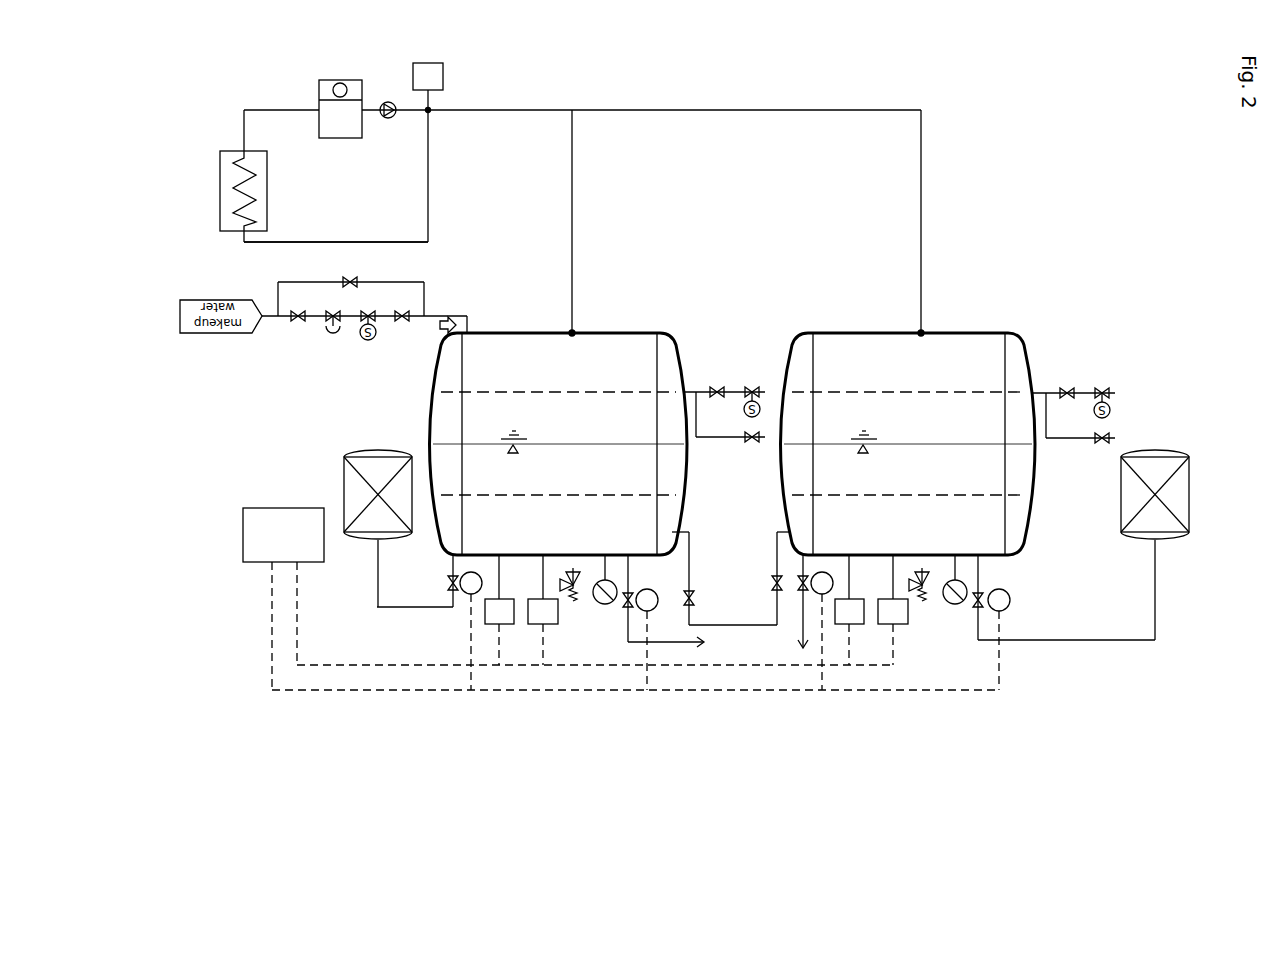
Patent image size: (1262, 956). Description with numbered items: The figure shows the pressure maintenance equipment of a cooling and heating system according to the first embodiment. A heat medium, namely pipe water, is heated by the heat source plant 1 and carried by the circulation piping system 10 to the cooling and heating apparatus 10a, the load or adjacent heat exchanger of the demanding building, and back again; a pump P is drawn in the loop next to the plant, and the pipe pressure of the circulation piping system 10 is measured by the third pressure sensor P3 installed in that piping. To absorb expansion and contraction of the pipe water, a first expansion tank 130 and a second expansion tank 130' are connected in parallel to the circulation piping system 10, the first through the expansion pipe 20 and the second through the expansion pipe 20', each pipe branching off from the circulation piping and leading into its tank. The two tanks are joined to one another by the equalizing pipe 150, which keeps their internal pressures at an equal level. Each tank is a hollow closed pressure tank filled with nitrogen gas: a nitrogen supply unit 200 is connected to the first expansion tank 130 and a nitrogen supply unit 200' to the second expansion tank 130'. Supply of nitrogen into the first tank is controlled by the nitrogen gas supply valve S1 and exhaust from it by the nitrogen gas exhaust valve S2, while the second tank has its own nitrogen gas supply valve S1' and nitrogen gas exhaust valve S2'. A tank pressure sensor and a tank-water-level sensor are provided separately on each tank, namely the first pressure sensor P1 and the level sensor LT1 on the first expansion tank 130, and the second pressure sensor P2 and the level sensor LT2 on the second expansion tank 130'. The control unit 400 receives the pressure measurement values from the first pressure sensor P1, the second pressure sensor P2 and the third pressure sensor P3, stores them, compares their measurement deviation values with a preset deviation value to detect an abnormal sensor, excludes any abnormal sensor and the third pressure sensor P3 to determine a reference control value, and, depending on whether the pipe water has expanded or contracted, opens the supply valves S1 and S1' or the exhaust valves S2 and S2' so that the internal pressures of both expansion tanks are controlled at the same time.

The heat source plant 1 is at (319, 90).
The circulation pump P is at (388, 102).
The third pressure sensor P3 is at (428, 86).
The circulation piping system 10 is at (402, 243).
The cooling and heating apparatus 10a is at (228, 233).
The expansion pipe 20 is at (541, 223).
The expansion pipe 20' is at (838, 223).
The first expansion tank 130 is at (536, 452).
The second expansion tank 130' is at (877, 444).
The equalizing pipe 150 is at (740, 625).
The nitrogen supply unit 200 is at (361, 506).
The nitrogen supply unit 200' is at (1155, 545).
The control unit 400 is at (287, 508).
The nitrogen gas supply valve S1 is at (663, 622).
The nitrogen gas exhaust valve S2 is at (429, 622).
The nitrogen gas supply valve S1' is at (815, 622).
The nitrogen gas exhaust valve S2' is at (1064, 622).
The tank-water-level sensor LT1 is at (499, 610).
The tank-water-level sensor LT2 is at (849, 610).
The first pressure sensor P1 is at (543, 610).
The second pressure sensor P2 is at (893, 610).